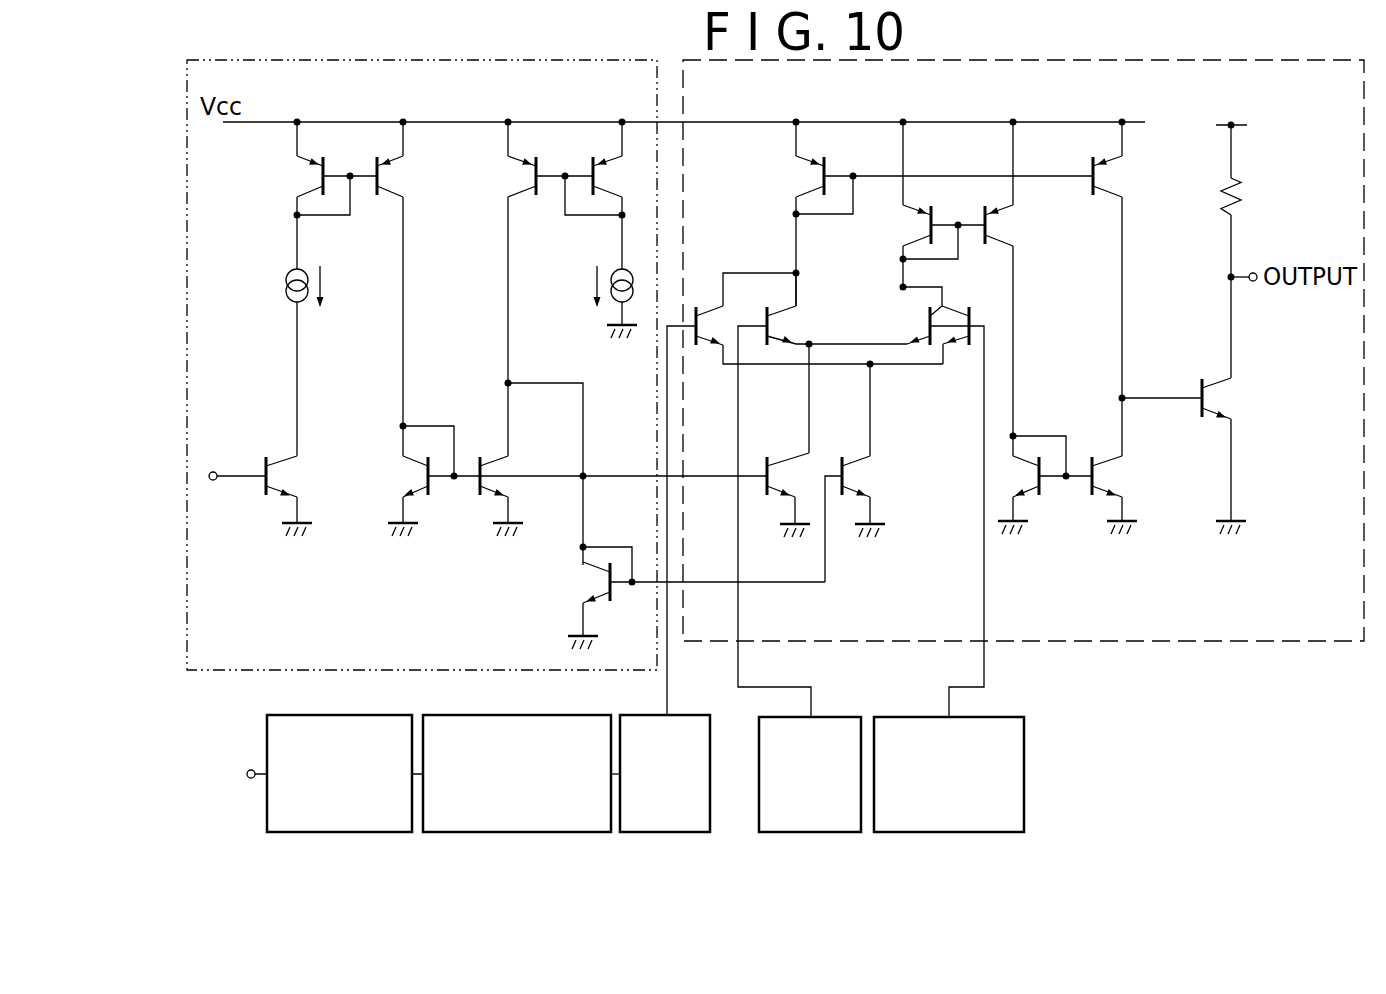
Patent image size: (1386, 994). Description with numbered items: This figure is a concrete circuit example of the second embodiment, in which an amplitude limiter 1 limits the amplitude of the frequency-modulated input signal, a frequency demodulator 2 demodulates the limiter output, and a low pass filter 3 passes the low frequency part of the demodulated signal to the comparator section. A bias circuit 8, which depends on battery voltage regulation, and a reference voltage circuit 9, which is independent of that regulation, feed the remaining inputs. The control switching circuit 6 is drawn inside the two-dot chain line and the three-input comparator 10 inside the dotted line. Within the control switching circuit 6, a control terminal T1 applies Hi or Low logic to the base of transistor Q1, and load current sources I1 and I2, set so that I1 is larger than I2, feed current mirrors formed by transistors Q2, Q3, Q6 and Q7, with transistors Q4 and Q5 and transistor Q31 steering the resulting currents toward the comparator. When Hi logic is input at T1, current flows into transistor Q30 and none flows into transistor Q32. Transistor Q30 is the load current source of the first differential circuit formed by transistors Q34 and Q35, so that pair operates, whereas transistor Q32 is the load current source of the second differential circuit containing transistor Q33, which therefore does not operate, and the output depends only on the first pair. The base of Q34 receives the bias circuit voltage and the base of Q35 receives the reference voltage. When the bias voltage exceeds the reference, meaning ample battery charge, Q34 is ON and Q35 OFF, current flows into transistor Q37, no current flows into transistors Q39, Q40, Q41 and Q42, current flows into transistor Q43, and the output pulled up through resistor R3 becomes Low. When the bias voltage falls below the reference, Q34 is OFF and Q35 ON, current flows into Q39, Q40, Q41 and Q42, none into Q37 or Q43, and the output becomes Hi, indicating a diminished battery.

The amplitude limiter 1 is at (337, 711).
The frequency demodulator 2 is at (499, 711).
The low pass filter 3 is at (682, 711).
The control switching circuit 6 is at (218, 672).
The bias circuit 8 is at (838, 712).
The reference voltage circuit 9 is at (1012, 712).
The 3-input comparator 10 is at (1277, 643).
The control terminal T1 is at (213, 470).
The load current source I1 is at (316, 261).
The load current source I2 is at (600, 302).
The resistor R3 is at (1245, 203).
The transistor Q1 is at (283, 478).
The transistor Q2 is at (302, 181).
The transistor Q3 is at (397, 179).
The transistor Q4 is at (420, 477).
The transistor Q5 is at (500, 468).
The transistor Q6 is at (527, 174).
The transistor Q7 is at (593, 168).
The transistor Q30 is at (767, 456).
The transistor Q31 is at (587, 584).
The transistor Q32 is at (862, 479).
The transistor Q33 is at (714, 322).
The transistor Q34 is at (782, 331).
The transistor Q35 is at (920, 327).
The transistor Q37 is at (797, 181).
The transistor Q39 is at (916, 233).
The transistor Q40 is at (1110, 184).
The transistor Q41 is at (1040, 497).
The transistor Q42 is at (1112, 478).
The transistor Q43 is at (1220, 400).